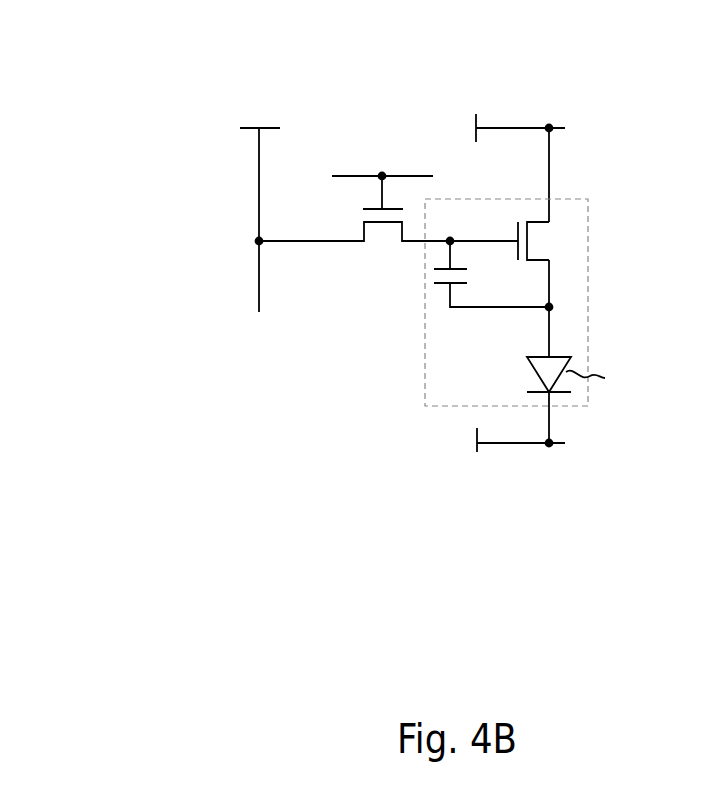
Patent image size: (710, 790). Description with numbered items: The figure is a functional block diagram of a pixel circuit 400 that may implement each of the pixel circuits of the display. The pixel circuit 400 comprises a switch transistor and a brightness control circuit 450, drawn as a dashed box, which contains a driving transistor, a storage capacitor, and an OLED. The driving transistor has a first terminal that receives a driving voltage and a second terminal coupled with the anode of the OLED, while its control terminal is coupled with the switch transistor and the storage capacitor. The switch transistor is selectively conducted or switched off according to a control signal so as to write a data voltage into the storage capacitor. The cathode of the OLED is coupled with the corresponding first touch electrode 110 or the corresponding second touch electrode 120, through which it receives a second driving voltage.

The pixel circuit 400 is at (83, 28).
The brightness control circuit 450 is at (588, 302).
The first touch electrode 110 is at (492, 465).
The second touch electrode 120 is at (507, 443).